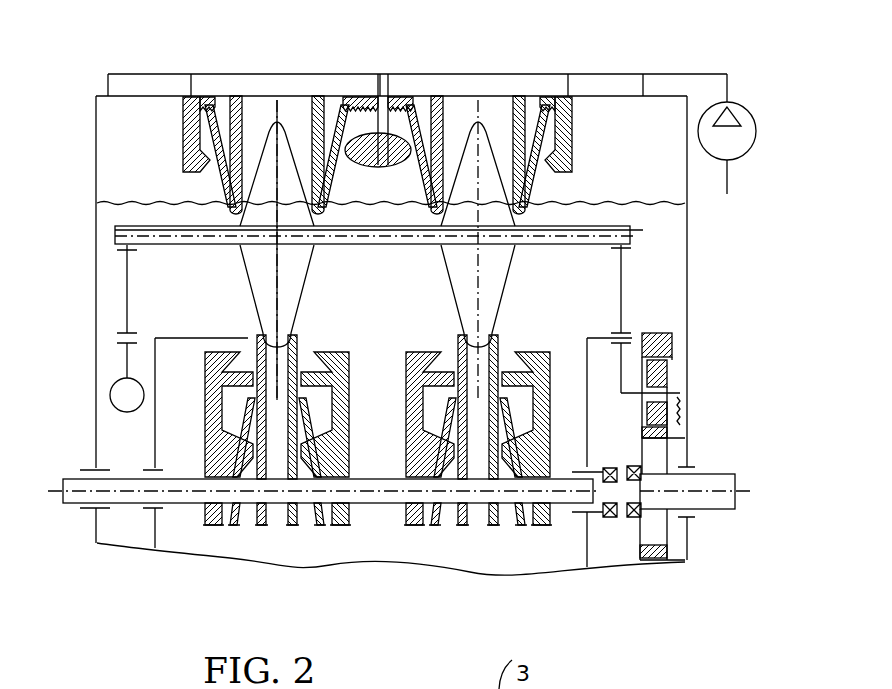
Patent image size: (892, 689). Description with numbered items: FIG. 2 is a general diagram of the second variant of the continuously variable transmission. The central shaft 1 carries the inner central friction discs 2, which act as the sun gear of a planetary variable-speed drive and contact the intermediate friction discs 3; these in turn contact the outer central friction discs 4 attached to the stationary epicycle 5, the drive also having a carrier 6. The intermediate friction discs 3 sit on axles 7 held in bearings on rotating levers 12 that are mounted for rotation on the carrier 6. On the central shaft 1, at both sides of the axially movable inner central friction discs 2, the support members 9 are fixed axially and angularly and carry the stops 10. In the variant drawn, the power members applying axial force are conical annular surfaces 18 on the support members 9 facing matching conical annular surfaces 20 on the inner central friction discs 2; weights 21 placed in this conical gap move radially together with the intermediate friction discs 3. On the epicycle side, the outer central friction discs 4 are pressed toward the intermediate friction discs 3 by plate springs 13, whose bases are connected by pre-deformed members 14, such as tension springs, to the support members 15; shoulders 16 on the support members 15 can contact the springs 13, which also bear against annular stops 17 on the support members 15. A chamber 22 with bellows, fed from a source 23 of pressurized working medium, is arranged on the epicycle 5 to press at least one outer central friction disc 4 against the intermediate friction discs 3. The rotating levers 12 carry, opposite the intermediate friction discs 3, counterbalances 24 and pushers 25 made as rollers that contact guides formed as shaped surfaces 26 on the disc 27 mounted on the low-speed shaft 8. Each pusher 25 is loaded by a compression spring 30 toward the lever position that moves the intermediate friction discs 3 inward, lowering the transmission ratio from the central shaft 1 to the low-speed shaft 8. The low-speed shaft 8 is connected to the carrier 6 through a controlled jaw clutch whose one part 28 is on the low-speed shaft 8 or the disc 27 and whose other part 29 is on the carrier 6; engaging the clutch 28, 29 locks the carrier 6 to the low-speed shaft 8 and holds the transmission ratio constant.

The central shaft 1 is at (62, 482).
The inner central friction discs 2 is at (250, 337).
The intermediate friction discs 3 is at (258, 263).
The outer central friction discs 4 is at (245, 115).
The epicycle 5 is at (687, 258).
The carrier 6 is at (148, 527).
The axle 7 is at (115, 232).
The low-speed shaft 8 is at (710, 483).
The support members 9 is at (210, 527).
The stops 10 is at (206, 432).
The rotating levers 12 is at (620, 285).
The springs 13 is at (222, 100).
The pre-deformed members 14 is at (322, 97).
The support members 15 is at (183, 150).
The shoulders 16 is at (191, 75).
The annular stops 17 is at (198, 170).
The conical annular surfaces 18 is at (320, 398).
The conical annular surfaces 20 is at (125, 348).
The weights 21 is at (330, 350).
The chamber 22 is at (125, 131).
The source of the pressurized working medium 23 is at (745, 118).
The counterbalances 24 is at (118, 401).
The pushers 25 is at (667, 373).
The shaped surfaces 26 is at (641, 430).
The disc 27 is at (660, 333).
The clutch part 28 is at (662, 557).
The clutch part 29 is at (615, 520).
The spring 30 is at (677, 403).